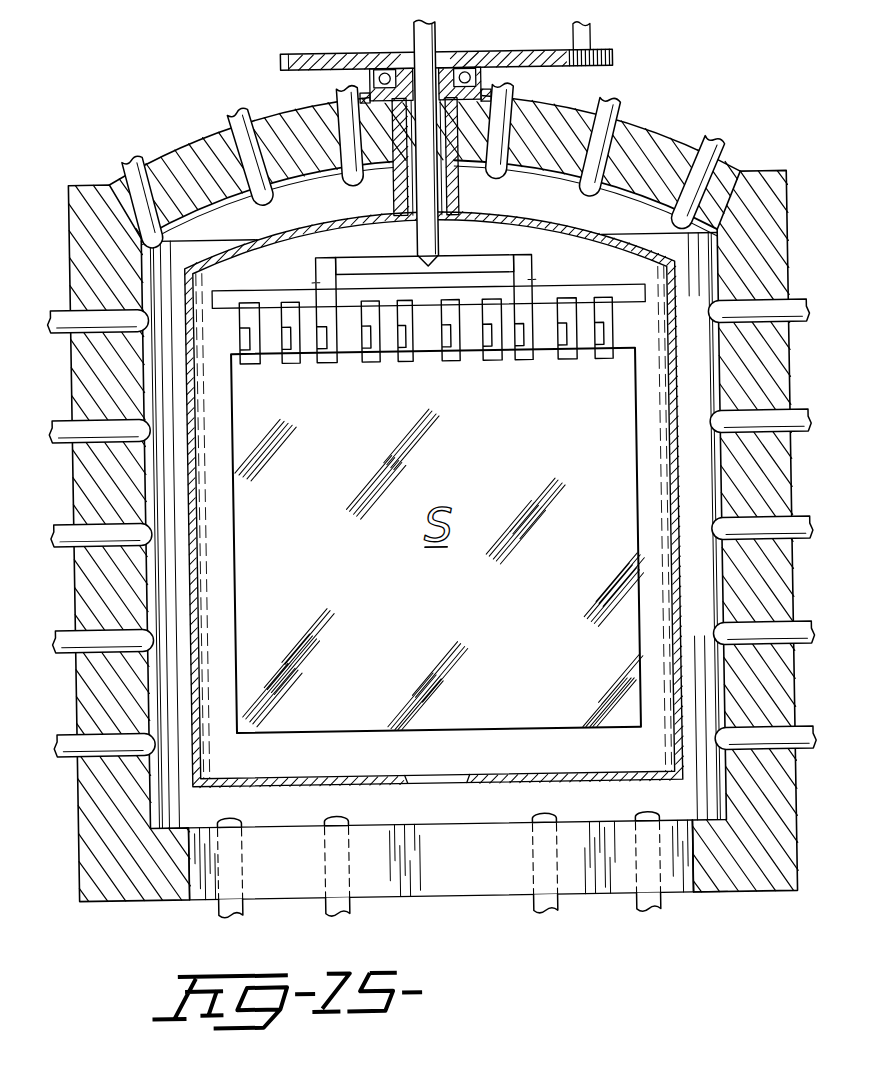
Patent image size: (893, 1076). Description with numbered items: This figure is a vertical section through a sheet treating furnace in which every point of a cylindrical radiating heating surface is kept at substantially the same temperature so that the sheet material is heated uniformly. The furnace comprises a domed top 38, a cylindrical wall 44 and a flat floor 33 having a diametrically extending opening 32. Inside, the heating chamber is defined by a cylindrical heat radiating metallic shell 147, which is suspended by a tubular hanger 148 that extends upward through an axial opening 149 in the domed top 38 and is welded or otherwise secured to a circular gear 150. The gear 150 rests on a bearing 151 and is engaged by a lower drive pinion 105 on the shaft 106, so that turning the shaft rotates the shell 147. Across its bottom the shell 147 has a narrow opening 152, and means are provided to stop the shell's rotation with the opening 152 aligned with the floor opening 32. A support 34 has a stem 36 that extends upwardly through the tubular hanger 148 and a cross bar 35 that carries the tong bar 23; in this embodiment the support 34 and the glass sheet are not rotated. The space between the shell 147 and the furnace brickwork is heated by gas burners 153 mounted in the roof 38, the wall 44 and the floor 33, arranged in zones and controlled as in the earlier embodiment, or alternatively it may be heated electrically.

The circular gear 150 is at (325, 52).
The support 34 is at (456, 35).
The shaft 106 is at (605, 31).
The lower drive pinion 105 is at (620, 59).
The bearing 151 is at (487, 77).
The domed top 38 is at (646, 134).
The gas burners 153 is at (270, 194).
The axial opening 149 is at (403, 178).
The tubular hanger 148 is at (459, 182).
The stem 36 is at (422, 239).
The cross bar 35 is at (468, 258).
The tong bar 23 is at (592, 285).
The cylindrical heat radiating metallic shell 147 is at (194, 406).
The cylindrical wall 44 is at (720, 395).
The narrow opening 152 is at (448, 774).
The diametrically extending opening 32 is at (413, 836).
The flat floor 33 is at (706, 892).